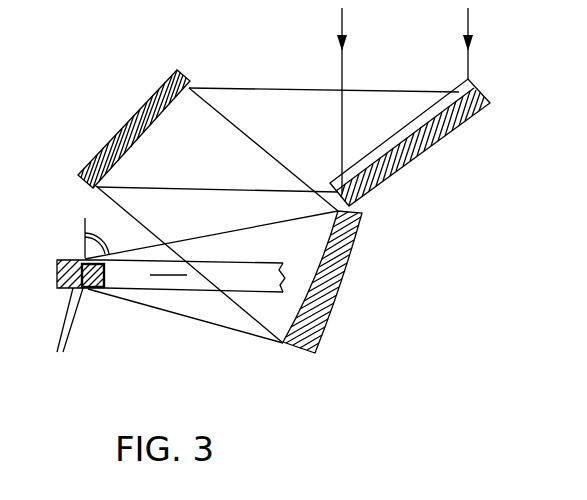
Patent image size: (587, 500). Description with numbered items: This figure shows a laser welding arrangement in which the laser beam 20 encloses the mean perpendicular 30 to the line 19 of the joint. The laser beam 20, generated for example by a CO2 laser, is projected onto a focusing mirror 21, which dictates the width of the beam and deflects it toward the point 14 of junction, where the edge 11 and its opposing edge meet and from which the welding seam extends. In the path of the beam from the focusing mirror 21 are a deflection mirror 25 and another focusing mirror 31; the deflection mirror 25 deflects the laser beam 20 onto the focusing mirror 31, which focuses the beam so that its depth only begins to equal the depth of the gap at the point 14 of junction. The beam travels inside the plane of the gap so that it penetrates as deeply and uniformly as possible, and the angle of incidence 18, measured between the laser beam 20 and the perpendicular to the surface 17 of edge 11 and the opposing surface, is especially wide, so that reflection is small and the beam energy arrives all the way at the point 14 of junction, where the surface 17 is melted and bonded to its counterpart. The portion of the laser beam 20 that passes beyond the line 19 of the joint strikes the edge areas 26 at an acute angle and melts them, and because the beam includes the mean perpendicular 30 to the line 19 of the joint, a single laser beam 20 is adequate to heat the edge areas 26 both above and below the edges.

The edge 11 is at (267, 268).
The point of junction 14 is at (86, 288).
The surface 17 is at (254, 287).
The angle of incidence 18 is at (108, 253).
The line of the joint 19 is at (106, 275).
The laser beam 20 is at (412, 66).
The focusing mirror 21 is at (440, 137).
The deflection mirror 25 is at (171, 76).
The edge areas 26 is at (85, 289).
The mean perpendicular 30 is at (165, 277).
The focusing mirror 31 is at (311, 333).